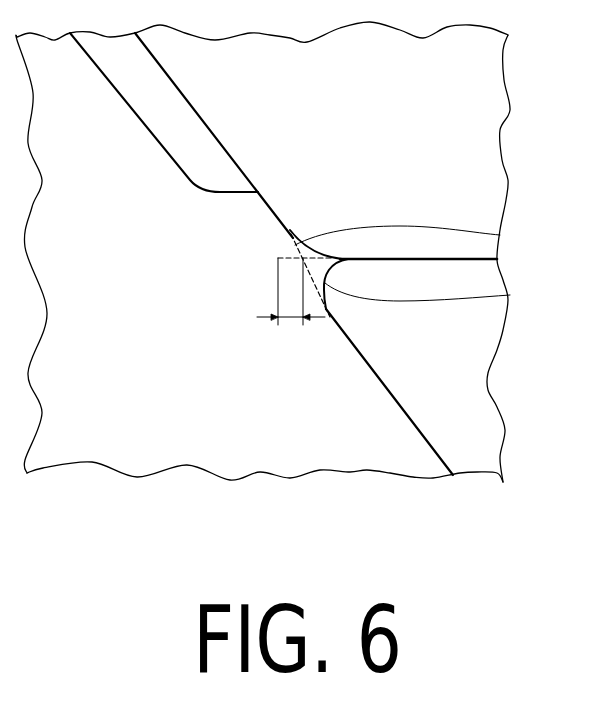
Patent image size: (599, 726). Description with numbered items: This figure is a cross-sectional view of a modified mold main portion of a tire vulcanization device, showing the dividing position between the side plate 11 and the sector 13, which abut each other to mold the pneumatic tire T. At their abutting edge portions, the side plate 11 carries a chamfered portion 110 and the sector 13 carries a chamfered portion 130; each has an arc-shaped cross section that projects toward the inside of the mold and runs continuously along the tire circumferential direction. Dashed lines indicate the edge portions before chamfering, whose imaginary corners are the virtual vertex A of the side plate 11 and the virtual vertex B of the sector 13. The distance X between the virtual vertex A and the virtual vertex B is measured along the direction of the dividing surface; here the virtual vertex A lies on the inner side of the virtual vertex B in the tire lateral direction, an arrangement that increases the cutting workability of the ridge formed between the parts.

The side plate 11 is at (475, 418).
The sector 13 is at (478, 133).
The chamfered portion 110 is at (510, 295).
The chamfered portion 130 is at (500, 235).
The pneumatic tire T is at (162, 440).
The virtual vertex A is at (280, 259).
The virtual vertex B is at (306, 248).
The distance X is at (291, 305).